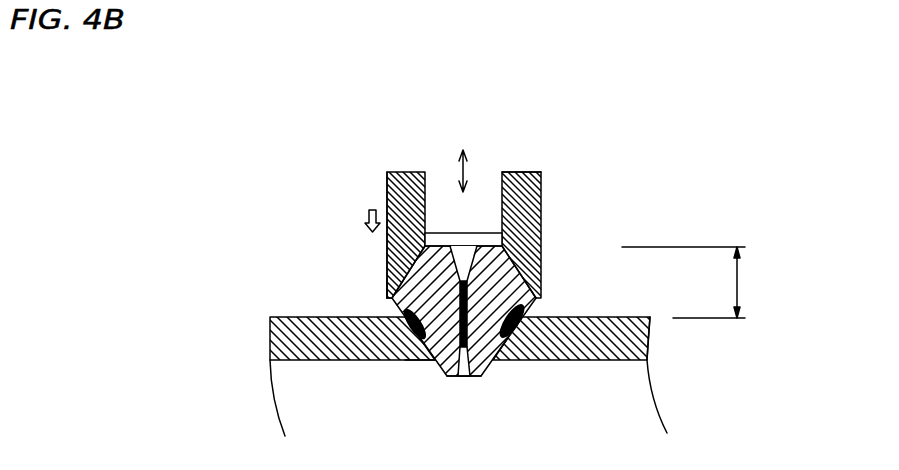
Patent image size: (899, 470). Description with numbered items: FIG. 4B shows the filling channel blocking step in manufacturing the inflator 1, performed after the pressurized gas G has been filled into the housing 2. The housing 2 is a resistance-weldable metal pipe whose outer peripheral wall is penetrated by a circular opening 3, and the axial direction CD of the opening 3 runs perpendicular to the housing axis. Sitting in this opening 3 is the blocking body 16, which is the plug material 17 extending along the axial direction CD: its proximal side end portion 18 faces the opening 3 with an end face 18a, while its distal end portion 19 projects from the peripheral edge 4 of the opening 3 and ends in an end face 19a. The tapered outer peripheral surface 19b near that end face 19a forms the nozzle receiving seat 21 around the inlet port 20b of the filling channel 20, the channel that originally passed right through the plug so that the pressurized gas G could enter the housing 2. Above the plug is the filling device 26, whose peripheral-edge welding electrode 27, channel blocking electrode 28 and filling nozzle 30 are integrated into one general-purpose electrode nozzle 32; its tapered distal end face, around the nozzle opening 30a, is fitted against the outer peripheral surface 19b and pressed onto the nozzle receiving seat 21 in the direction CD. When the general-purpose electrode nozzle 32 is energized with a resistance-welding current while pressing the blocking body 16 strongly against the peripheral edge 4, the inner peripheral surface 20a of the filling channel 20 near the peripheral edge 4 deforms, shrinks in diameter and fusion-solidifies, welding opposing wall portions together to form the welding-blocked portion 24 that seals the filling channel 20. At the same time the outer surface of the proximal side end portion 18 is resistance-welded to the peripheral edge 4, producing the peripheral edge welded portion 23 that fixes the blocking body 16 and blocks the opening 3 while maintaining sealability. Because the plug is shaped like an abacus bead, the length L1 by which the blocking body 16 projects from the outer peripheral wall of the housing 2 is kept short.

The inflator 1 is at (221, 232).
The housing 2 is at (305, 317).
The opening 3 is at (427, 358).
The peripheral edge 4 is at (540, 312).
The blocking body 16 is at (368, 270).
The plug material 17 is at (388, 300).
The proximal side end portion 18 is at (503, 358).
The end face 18a is at (453, 378).
The distal end portion 19 is at (387, 192).
The end face 19a is at (448, 240).
The outer peripheral surface 19b is at (387, 262).
The filling channel 20 is at (467, 377).
The inner peripheral surface 20a is at (572, 221).
The inlet port 20b is at (473, 246).
The nozzle receiving seat 21 is at (332, 217).
The peripheral edge welded portion 23 is at (408, 322).
The welding-blocked portion 24 is at (468, 292).
The filling device 26 is at (672, 143).
The peripheral-edge welding electrode 27 is at (672, 143).
The channel blocking electrode 28 is at (565, 170).
The filling nozzle 30 is at (672, 143).
The opening 30a is at (462, 240).
The general-purpose electrode nozzle 32 is at (672, 143).
The axial direction CD is at (468, 167).
The length L1 is at (696, 282).
The pressurized gas G is at (510, 437).